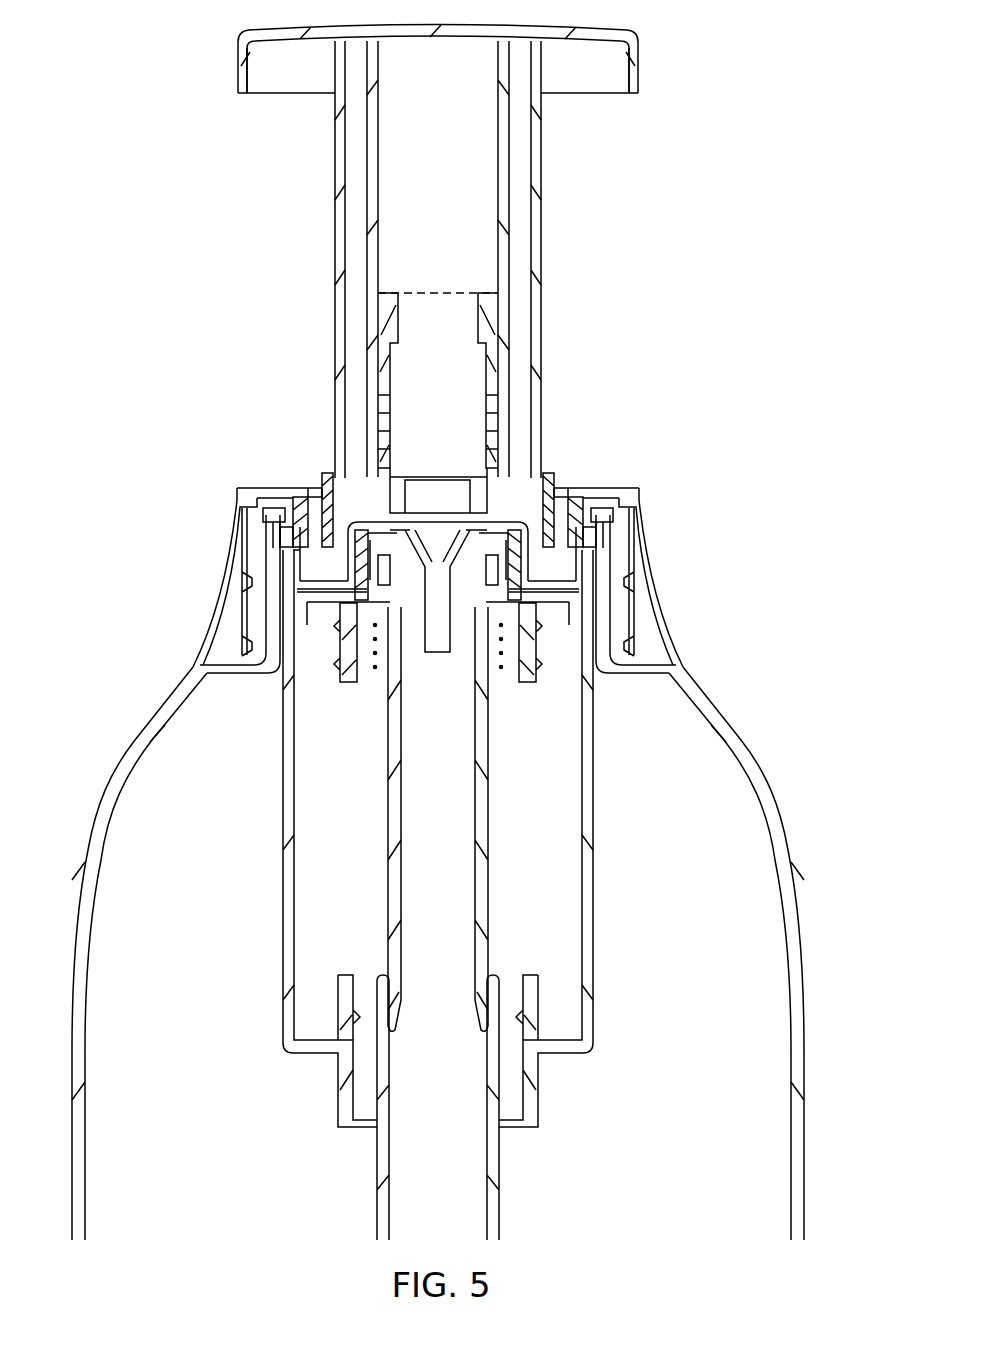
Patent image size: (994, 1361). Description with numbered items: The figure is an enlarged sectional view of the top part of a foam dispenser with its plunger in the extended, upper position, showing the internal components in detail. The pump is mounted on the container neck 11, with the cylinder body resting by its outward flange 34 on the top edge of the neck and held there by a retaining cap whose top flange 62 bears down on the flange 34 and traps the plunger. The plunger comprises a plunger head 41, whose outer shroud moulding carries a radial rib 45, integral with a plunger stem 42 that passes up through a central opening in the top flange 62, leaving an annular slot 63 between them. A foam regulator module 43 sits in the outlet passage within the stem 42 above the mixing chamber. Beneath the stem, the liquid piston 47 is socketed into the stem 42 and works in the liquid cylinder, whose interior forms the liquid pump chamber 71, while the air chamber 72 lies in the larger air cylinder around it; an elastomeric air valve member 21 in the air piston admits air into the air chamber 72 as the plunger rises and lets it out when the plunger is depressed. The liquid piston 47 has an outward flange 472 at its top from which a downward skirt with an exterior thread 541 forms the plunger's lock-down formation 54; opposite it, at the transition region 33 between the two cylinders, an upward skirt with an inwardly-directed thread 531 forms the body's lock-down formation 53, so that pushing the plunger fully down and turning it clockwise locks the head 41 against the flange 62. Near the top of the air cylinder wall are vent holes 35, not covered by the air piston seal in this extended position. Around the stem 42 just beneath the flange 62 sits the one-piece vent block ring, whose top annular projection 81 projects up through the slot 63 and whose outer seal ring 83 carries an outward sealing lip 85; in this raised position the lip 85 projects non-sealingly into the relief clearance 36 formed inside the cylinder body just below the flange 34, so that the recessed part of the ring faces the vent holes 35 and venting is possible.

The plunger head 41 is at (648, 48).
The radial rib 45 is at (583, 90).
The plunger stem 42 is at (542, 236).
The foam regulator module 43 is at (490, 314).
The top annular projection 81 is at (318, 474).
The top flange 62 is at (262, 492).
The annular slot 63 is at (305, 478).
The outward sealing lip 85 is at (588, 500).
The relief clearance 36 is at (600, 498).
The outward flange 34 is at (262, 512).
The vent holes 35 is at (283, 540).
The outer seal ring 83 is at (585, 530).
The air valve member 21 is at (520, 574).
The container neck 11 is at (266, 630).
The liquid piston 47 is at (388, 856).
The outward flange 472 is at (277, 673).
The transition region 33 is at (340, 1095).
The lock-down formation of the body 53 is at (336, 990).
The inwardly-directed thread 531 is at (520, 975).
The lock-down formation of the plunger 54 is at (350, 672).
The exterior thread 541 is at (530, 650).
The air chamber 72 is at (512, 842).
The liquid pump chamber 71 is at (422, 1191).